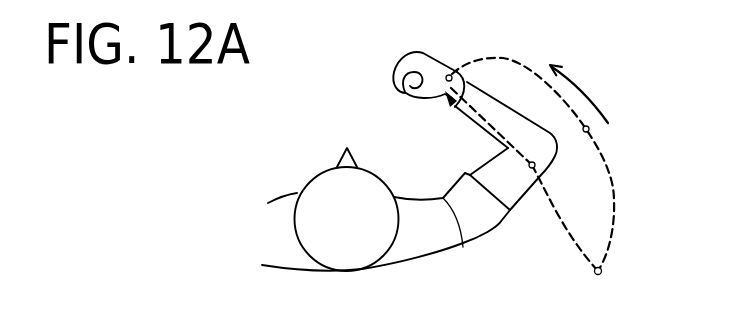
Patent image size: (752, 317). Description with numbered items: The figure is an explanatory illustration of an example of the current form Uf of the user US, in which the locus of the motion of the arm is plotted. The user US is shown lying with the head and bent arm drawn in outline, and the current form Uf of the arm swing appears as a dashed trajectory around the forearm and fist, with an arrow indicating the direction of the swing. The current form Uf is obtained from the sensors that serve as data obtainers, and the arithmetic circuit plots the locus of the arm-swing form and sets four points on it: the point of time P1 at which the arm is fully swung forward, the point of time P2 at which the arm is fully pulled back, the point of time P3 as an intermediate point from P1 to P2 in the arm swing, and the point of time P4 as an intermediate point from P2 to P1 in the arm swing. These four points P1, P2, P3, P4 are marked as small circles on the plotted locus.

The user US is at (279, 168).
The point of time at which the arm is fully swung forward P1 is at (448, 75).
The point of time at which the arm is fully pulled back P2 is at (603, 272).
The intermediate point from P1 to P2 in arm swing P3 is at (592, 130).
The intermediate point from P2 to P1 in arm swing P4 is at (529, 165).
The current form Uf is at (636, 188).